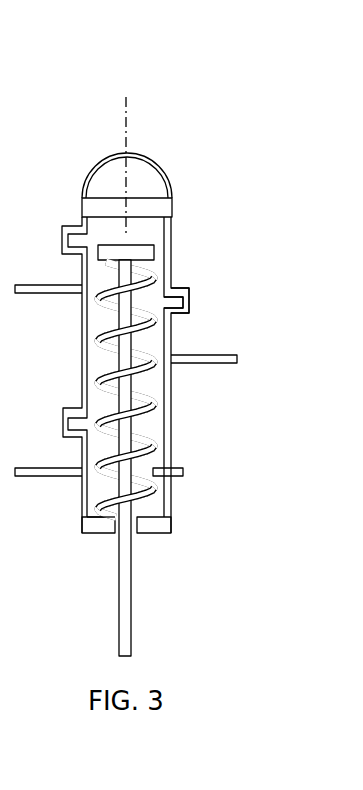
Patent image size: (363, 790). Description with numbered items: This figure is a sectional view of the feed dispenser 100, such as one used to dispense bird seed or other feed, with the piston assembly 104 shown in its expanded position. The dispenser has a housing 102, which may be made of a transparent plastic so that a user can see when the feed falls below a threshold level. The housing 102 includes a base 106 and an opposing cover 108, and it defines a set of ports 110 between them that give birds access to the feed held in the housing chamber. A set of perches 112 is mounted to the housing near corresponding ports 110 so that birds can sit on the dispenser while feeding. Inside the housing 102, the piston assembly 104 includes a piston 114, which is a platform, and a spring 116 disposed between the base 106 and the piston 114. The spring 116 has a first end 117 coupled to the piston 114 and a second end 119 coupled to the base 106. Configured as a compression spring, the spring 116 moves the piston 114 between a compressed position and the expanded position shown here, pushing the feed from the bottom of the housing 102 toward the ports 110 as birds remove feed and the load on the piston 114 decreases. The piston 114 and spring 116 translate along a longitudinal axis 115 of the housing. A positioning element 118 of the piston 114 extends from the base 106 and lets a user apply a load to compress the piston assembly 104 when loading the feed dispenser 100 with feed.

The feed dispenser 100 is at (177, 90).
The housing 102 is at (170, 282).
The piston assembly 104 is at (148, 240).
The base 106 is at (160, 536).
The cover 108 is at (82, 214).
The ports 110 is at (200, 294).
The perches 112 is at (197, 354).
The piston 114 is at (97, 253).
The longitudinal axis 115 is at (124, 119).
The spring 116 is at (152, 453).
The first end 117 is at (99, 273).
The positioning element 118 is at (132, 615).
The second end 119 is at (103, 521).